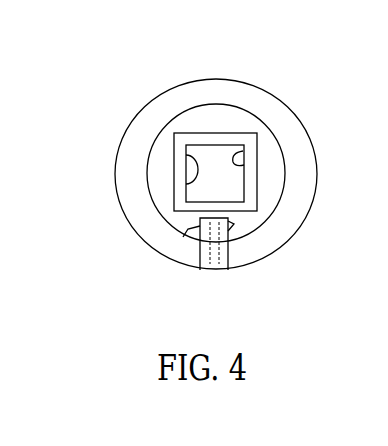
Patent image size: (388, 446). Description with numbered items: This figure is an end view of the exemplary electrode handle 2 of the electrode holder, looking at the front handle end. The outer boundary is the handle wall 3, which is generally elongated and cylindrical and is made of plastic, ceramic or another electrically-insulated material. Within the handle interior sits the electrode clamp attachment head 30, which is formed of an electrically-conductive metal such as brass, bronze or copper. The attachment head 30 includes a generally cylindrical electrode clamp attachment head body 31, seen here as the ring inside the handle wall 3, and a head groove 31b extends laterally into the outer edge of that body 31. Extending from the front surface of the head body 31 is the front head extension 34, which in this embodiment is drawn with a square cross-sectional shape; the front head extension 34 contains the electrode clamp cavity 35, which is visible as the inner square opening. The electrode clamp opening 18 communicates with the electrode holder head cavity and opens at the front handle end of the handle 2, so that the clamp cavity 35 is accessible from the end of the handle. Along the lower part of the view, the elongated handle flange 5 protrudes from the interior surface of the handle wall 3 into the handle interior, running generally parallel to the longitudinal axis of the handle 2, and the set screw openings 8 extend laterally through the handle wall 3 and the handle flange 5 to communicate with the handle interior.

The electrode handle 2 is at (197, 63).
The handle wall 3 is at (158, 107).
The electrode clamp attachment head 30 is at (273, 94).
The electrode clamp attachment head body 31 is at (186, 155).
The head groove 31b is at (218, 256).
The front head extension 34 is at (248, 181).
The electrode clamp cavity 35 is at (236, 163).
The electrode clamp opening 18 is at (186, 185).
The handle flange 5 is at (183, 237).
The set screw openings 8 is at (204, 267).